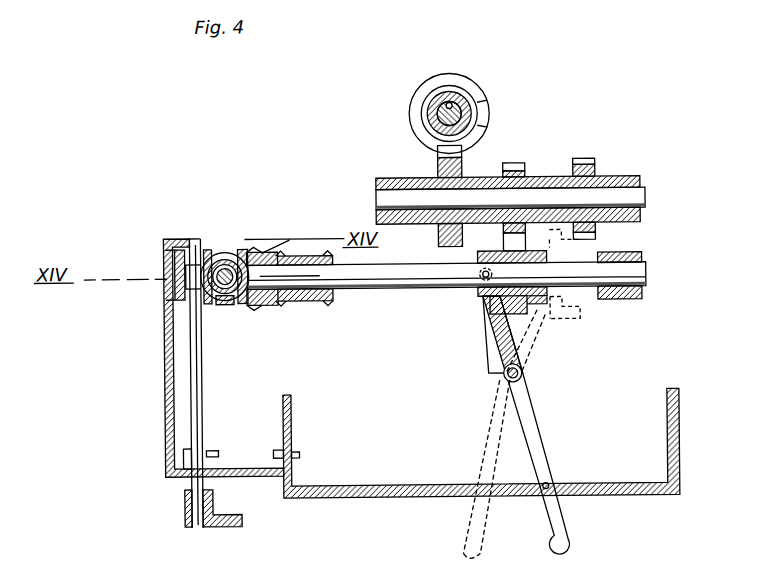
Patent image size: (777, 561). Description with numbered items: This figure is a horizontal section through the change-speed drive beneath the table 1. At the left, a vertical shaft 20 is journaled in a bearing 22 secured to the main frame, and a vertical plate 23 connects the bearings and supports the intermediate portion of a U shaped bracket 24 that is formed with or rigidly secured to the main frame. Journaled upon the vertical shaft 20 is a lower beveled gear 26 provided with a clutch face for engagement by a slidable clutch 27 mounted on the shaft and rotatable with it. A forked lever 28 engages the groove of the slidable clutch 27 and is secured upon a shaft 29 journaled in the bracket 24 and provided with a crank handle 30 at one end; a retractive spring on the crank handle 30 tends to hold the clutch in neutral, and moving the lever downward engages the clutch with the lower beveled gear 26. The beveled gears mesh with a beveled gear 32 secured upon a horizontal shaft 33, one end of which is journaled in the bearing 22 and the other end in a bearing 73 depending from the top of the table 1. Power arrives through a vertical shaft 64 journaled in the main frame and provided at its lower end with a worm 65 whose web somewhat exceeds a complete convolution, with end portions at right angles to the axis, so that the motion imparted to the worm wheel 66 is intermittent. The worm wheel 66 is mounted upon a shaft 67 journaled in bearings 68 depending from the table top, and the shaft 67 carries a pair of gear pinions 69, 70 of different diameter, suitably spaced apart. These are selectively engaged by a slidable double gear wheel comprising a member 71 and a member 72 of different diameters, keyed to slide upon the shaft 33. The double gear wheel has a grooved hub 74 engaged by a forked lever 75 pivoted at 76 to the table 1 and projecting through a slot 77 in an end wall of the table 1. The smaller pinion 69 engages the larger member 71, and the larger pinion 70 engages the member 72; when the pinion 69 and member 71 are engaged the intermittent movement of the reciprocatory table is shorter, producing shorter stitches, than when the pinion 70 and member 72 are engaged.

The frame 1 is at (371, 485).
The vertical shaft 20 is at (200, 298).
The bearing 22 is at (309, 304).
The vertical plate 23 is at (178, 273).
The U shaped bracket 24 is at (164, 404).
The lower beveled gear 26 is at (237, 305).
The slidable clutch 27 is at (244, 251).
The forked lever 28 is at (206, 250).
The shaft 29 is at (195, 480).
The crank handle 30 is at (226, 517).
The beveled gear 32 is at (294, 236).
The horizontal shaft 33 is at (412, 289).
The vertical shaft 64 is at (442, 105).
The worm 65 is at (454, 82).
The worm wheel 66 is at (439, 163).
The shaft 67 is at (377, 205).
The bearings 68 is at (380, 178).
The gear pinion 69 is at (508, 162).
The gear pinion 70 is at (586, 159).
The member of slidable gear wheel 71 is at (521, 310).
The member of slidable gear wheel 72 is at (566, 318).
The bearing 73 is at (640, 292).
The grooved hub 74 is at (482, 288).
The forked lever 75 is at (561, 521).
The pivot 76 is at (503, 378).
The slot 77 is at (477, 468).